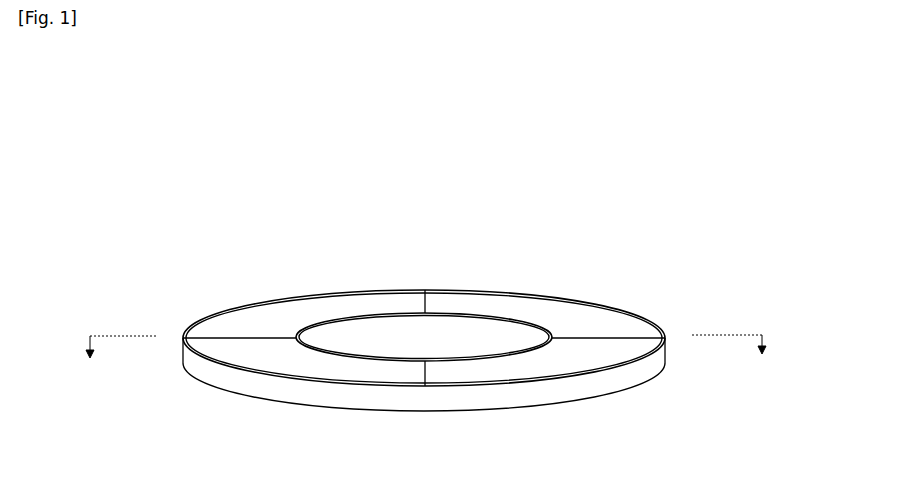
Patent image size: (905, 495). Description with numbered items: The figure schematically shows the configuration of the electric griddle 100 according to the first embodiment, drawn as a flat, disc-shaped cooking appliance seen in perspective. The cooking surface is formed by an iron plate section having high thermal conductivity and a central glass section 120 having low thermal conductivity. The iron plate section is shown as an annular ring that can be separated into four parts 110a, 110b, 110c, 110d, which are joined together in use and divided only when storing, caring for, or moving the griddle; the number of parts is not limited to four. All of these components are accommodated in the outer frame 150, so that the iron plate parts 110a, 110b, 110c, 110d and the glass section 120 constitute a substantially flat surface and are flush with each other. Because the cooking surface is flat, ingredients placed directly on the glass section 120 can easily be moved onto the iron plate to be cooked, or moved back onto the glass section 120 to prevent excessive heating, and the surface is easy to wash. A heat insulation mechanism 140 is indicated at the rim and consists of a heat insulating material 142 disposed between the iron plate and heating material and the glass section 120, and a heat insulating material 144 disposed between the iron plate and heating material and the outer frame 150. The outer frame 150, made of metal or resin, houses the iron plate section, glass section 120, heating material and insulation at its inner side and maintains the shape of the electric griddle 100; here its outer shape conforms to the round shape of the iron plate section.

The electric griddle 100 is at (381, 92).
The iron plate part 110a is at (252, 317).
The iron plate part 110b is at (553, 312).
The iron plate part 110c is at (517, 362).
The iron plate part 110d is at (265, 358).
The glass section 120 is at (450, 323).
The heat insulation mechanism 140 is at (483, 315).
The heat insulating material 142 is at (552, 337).
The heat insulating material 144 is at (665, 334).
The outer frame 150 is at (653, 370).